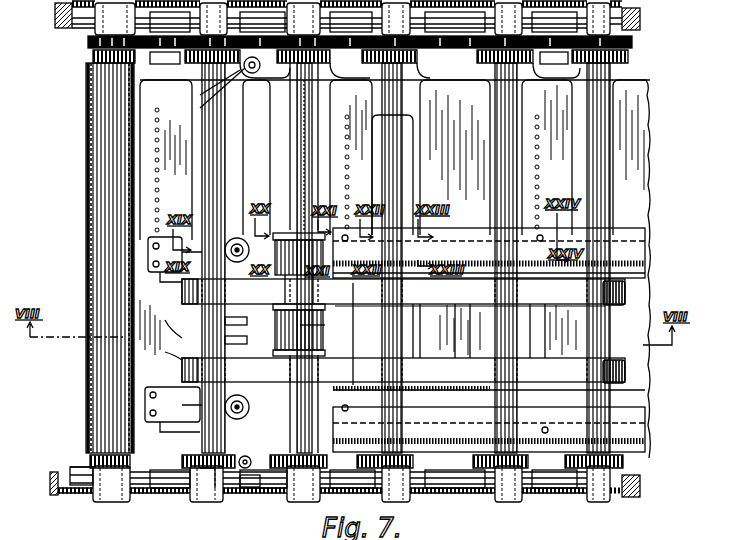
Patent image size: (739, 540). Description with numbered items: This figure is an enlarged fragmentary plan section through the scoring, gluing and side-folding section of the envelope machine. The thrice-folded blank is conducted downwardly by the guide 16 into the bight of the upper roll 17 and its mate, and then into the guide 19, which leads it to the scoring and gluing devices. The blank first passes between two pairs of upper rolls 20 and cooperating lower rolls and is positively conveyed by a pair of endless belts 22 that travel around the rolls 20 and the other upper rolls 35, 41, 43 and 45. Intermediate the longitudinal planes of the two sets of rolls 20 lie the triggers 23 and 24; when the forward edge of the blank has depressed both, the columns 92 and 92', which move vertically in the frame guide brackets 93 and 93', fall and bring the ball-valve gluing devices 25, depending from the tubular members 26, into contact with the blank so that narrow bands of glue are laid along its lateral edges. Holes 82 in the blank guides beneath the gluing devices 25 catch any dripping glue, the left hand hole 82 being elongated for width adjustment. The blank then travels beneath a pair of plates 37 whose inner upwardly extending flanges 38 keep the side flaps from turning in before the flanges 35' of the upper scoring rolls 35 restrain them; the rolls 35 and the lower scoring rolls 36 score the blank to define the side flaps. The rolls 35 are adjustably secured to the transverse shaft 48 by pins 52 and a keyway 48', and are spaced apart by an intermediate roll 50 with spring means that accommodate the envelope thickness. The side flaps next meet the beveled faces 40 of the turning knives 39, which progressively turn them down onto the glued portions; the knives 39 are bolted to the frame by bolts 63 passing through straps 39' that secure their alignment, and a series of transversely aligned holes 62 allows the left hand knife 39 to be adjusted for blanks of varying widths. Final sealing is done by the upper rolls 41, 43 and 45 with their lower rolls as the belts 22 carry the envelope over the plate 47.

The guide 16 is at (90, 340).
The upper roll 17 is at (104, 205).
The guide 19 is at (130, 360).
The upper rolls 20 is at (168, 332).
The endless belts 22 is at (464, 331).
The trigger (trip device) 23 is at (242, 345).
The trigger (trip device) 24 is at (403, 292).
The ball-valve gluing devices 25 is at (232, 250).
The tubular depending members 26 is at (233, 222).
The upper scoring rolls 35 is at (308, 269).
The flanges 35' is at (264, 402).
The lower scoring rolls 36 is at (283, 222).
The plates 37 is at (170, 272).
The flanges 38 is at (237, 327).
The turning knives 39 is at (489, 340).
The straps 39' is at (453, 337).
The beveled faces 40 is at (365, 405).
The upper rolls 41 is at (413, 306).
The upper rolls 43 is at (528, 305).
The upper rolls 45 is at (615, 305).
The plate 47 is at (445, 100).
The transverse shaft 48 is at (260, 77).
The keyway 48' is at (331, 155).
The intermediate roll 50 is at (325, 325).
The pins 52 is at (262, 488).
The holes 62 is at (347, 167).
The bolts 63 is at (340, 235).
The holes 82 is at (255, 180).
The column 92 is at (230, 492).
The column 92' is at (211, 88).
The frame guide bracket 93 is at (195, 498).
The frame guide bracket 93' is at (207, 82).